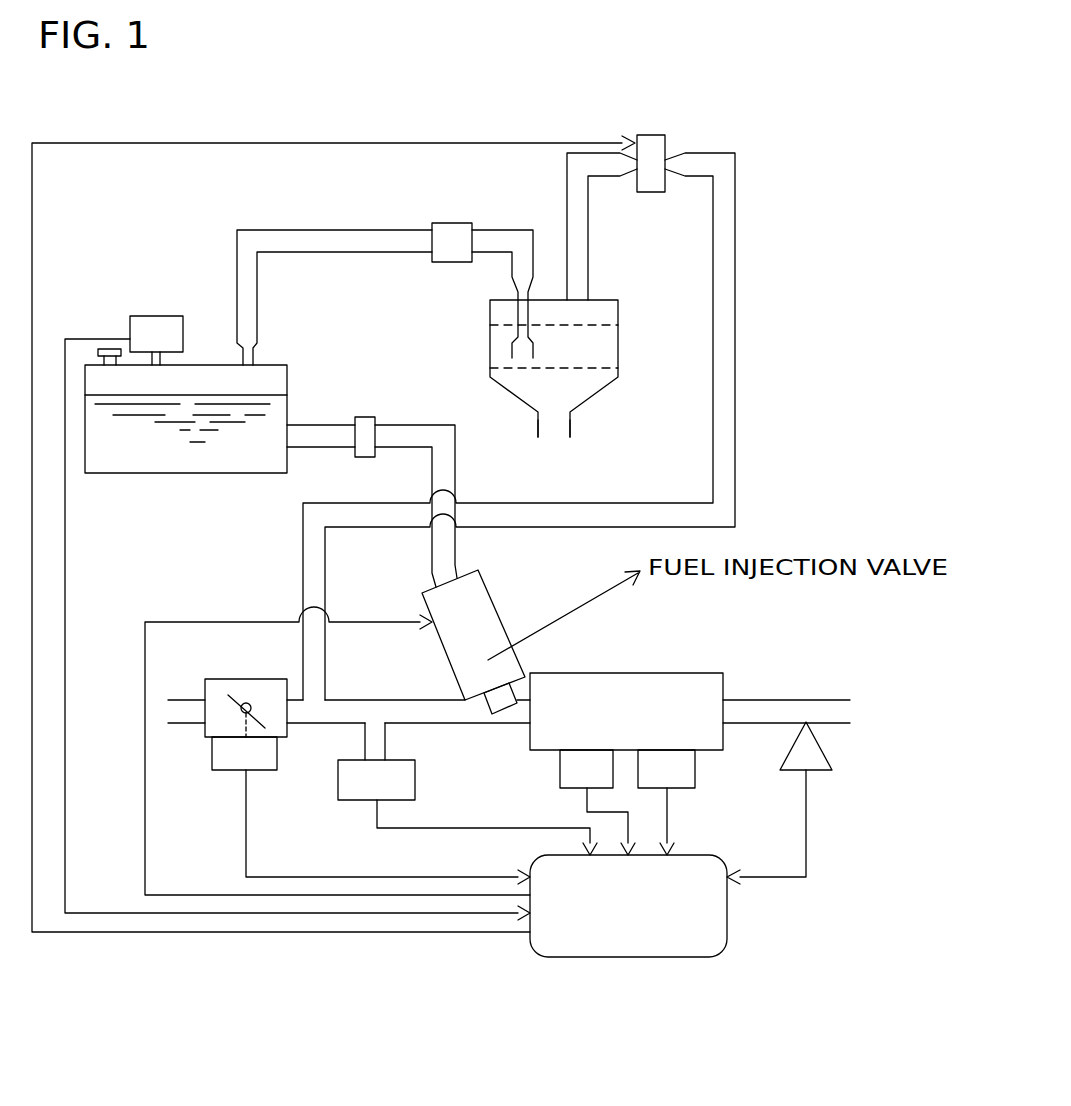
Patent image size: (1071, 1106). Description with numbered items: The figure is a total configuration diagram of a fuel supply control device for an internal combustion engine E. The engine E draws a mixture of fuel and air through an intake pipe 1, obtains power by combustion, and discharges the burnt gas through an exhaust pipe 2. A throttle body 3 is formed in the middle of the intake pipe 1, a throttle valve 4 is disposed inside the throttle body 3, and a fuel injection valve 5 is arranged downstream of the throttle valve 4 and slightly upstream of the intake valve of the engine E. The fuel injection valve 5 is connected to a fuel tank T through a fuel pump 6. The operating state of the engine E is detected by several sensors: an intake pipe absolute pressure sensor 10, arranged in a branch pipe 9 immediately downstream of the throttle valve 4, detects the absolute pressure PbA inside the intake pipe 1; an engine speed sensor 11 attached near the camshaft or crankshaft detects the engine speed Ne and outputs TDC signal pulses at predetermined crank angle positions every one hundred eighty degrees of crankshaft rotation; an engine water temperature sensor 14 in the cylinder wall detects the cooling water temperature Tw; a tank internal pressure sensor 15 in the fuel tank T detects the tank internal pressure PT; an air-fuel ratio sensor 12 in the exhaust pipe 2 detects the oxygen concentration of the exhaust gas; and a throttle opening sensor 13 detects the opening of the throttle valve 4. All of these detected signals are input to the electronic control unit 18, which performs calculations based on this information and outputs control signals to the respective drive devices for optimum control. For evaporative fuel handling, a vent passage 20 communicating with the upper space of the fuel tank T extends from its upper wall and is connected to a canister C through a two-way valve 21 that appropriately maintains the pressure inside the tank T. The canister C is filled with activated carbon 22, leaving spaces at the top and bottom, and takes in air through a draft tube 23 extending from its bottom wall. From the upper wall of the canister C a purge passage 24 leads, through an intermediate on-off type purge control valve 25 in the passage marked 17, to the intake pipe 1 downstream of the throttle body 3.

The intake pipe 1 is at (385, 698).
The exhaust pipe 2 is at (787, 700).
The throttle body 3 is at (202, 730).
The throttle valve 4 is at (238, 692).
The fuel injection valve 5 is at (490, 590).
The fuel pump 6 is at (365, 417).
The branch pipe 9 is at (385, 736).
The intake pipe absolute pressure sensor 10 is at (415, 782).
The engine speed sensor 11 is at (695, 770).
The air-fuel ratio sensor 12 is at (818, 772).
The throttle opening sensor 13 is at (258, 770).
The engine water temperature sensor 14 is at (560, 765).
The tank internal pressure sensor 15 is at (160, 316).
The purge passage 17 is at (567, 170).
The electronic control unit 18 is at (625, 957).
The vent passage 20 is at (291, 230).
The two-way valve 21 is at (451, 223).
The activated carbon 22 is at (618, 340).
The draft tube 23 is at (570, 427).
The purge passage 24 is at (735, 370).
The purge control valve 25 is at (650, 135).
The fuel tank T is at (175, 473).
The canister C is at (490, 343).
The internal combustion engine E is at (628, 673).